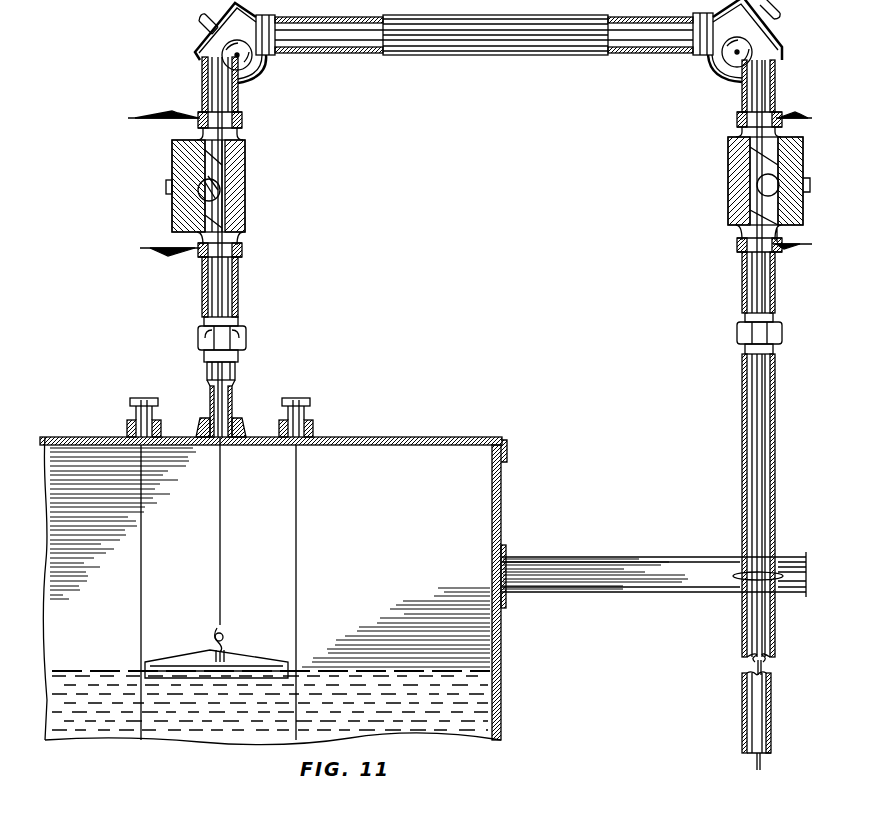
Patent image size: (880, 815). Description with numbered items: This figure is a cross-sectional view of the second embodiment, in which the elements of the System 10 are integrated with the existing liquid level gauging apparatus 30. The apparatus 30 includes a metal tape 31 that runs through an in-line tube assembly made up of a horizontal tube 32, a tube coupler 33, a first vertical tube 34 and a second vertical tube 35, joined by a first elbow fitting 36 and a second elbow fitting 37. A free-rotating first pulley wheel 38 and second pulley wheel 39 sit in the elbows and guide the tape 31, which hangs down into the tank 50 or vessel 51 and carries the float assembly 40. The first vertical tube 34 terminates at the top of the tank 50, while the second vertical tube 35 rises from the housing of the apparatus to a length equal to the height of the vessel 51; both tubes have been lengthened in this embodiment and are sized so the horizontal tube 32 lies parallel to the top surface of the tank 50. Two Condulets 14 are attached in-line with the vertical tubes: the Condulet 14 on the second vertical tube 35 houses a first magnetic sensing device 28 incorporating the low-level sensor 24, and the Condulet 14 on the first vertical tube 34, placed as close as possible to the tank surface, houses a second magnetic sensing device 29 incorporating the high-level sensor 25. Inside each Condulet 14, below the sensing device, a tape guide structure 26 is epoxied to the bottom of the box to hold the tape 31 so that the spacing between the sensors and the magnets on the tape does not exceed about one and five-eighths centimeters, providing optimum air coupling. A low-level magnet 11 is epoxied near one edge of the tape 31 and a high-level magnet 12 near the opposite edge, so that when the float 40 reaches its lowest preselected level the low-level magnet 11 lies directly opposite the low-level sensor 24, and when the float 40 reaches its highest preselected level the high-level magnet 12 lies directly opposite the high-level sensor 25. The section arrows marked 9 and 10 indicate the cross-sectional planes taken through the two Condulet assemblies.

The section line 9- 9 is at (153, 185).
The System 10 is at (792, 184).
The low-level permanent magnet 11 is at (762, 745).
The high-level permanent magnet 12 is at (210, 402).
The Condulet 14 is at (245, 233).
The low-level sensor 24 is at (736, 230).
The high-level sensor 25 is at (200, 200).
The tape guide structure 26 is at (245, 180).
The first magnetic sensing device 28 is at (740, 142).
The second magnetic sensing device 29 is at (172, 155).
The apparatus 30 is at (642, 112).
The metal tape 31 is at (236, 425).
The horizontal tube 32 is at (500, 52).
The tube coupler 33 is at (268, 333).
The first vertical tube 34 is at (236, 375).
The second vertical tube 35 is at (742, 460).
The first elbow fitting 36 is at (252, 70).
The second elbow fitting 37 is at (706, 58).
The first pulley wheel 38 is at (196, 56).
The second pulley wheel 39 is at (738, 80).
The float assembly 40 is at (232, 678).
The tank 50 is at (423, 571).
The vessel 51 is at (271, 566).